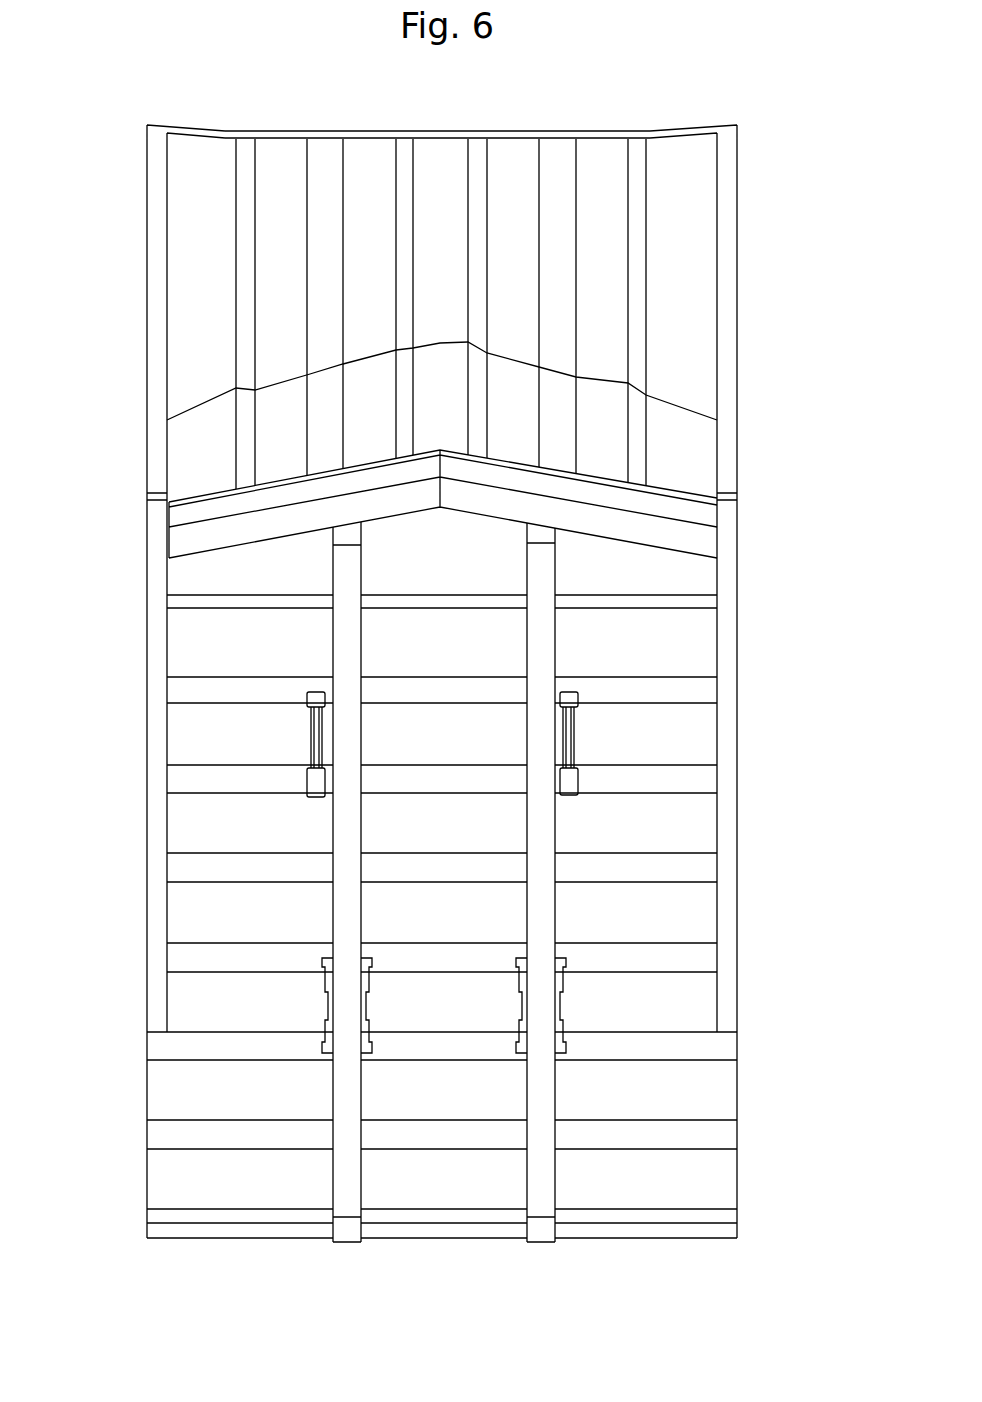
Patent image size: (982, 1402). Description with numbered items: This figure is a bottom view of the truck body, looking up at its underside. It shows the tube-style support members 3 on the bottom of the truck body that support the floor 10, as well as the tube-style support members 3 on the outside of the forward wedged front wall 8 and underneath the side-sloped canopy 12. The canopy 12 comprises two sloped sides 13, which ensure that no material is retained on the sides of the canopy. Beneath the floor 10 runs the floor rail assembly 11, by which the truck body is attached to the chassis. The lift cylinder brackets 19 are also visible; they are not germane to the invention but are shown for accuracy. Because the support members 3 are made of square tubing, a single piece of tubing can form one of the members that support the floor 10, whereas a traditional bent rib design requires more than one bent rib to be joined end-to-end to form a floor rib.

The tube-style support members 3 is at (307, 160).
The front wall 8 is at (370, 405).
The floor 10 is at (417, 1088).
The floor rail assembly 11 is at (541, 1232).
The side-sloped canopy 12 is at (372, 210).
The sloped sides 13 is at (193, 270).
The lift cylinder brackets 19 is at (310, 738).